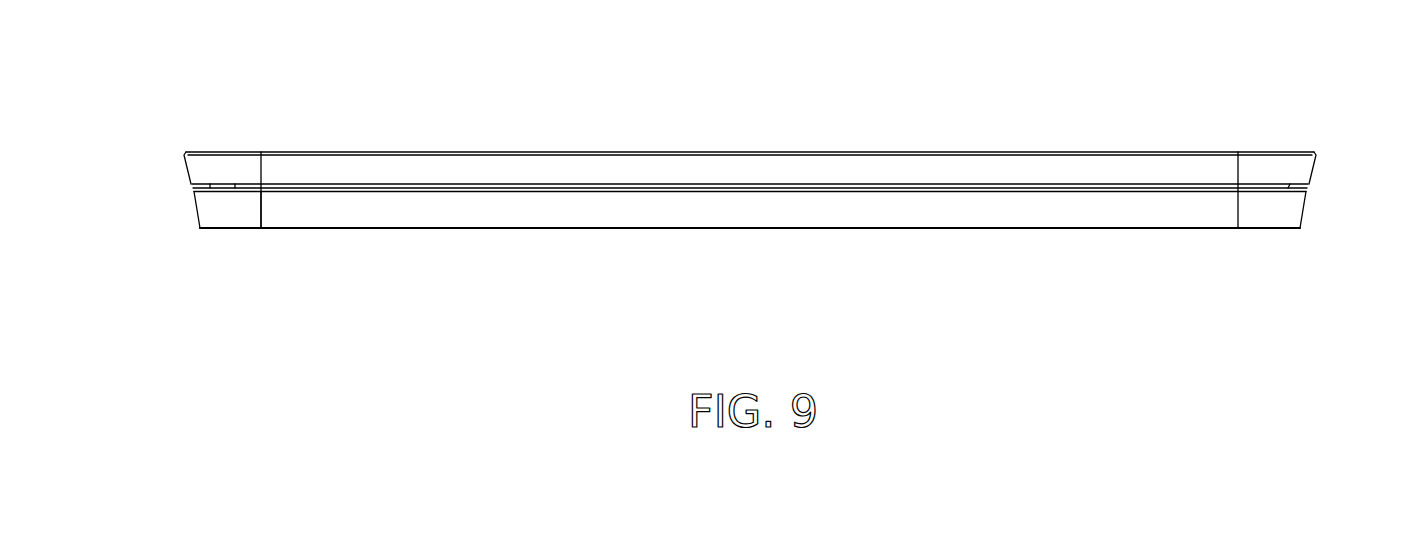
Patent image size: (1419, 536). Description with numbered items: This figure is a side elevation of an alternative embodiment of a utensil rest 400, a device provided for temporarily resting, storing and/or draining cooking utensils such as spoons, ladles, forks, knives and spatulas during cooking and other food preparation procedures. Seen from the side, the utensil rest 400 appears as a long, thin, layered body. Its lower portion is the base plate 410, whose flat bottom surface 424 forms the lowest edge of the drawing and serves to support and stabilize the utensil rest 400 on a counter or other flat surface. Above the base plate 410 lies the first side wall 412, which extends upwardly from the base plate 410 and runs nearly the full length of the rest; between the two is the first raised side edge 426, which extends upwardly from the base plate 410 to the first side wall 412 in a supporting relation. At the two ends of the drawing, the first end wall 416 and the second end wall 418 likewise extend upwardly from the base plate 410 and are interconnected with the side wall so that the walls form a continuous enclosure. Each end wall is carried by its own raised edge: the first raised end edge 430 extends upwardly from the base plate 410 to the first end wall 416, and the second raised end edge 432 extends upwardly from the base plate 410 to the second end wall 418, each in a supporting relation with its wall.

The utensil rest 400 is at (751, 163).
The base plate 410 is at (758, 249).
The first side wall 412 is at (499, 168).
The first end wall 416 is at (1313, 170).
The second end wall 418 is at (187, 171).
The flat bottom surface 424 is at (285, 229).
The first raised side edge 426 is at (664, 210).
The first raised end edge 430 is at (1303, 213).
The second raised end edge 432 is at (196, 212).